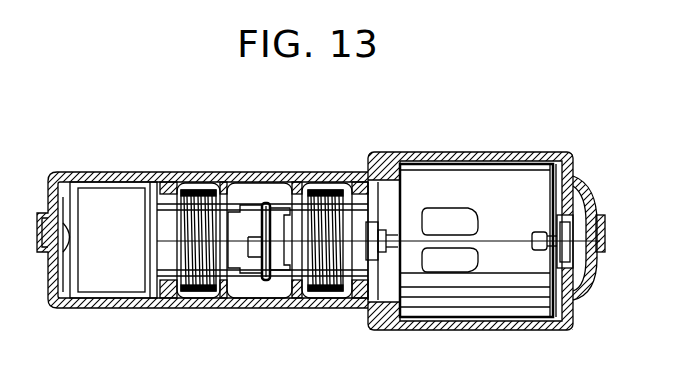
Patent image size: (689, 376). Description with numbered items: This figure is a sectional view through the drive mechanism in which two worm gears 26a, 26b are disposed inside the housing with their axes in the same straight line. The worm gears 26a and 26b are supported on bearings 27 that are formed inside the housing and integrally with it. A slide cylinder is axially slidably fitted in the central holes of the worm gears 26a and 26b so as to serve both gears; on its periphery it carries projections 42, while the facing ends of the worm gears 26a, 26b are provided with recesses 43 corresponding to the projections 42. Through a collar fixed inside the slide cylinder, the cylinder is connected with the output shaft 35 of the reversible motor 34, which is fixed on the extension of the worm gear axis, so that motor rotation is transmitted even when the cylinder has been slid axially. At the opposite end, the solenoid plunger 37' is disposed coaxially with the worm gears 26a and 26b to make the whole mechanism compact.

The worm gear 26a is at (163, 250).
The worm gear 26b is at (366, 178).
The bearing 27 is at (170, 183).
The reversible motor 34 is at (481, 187).
The output shaft 35 is at (378, 227).
The solenoid plunger 37' is at (113, 210).
The projection 42 is at (252, 287).
The recess 43 is at (249, 222).